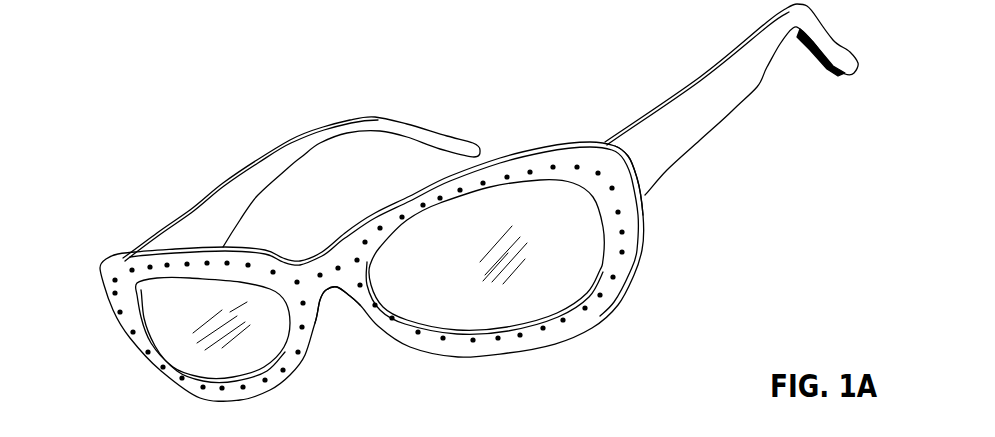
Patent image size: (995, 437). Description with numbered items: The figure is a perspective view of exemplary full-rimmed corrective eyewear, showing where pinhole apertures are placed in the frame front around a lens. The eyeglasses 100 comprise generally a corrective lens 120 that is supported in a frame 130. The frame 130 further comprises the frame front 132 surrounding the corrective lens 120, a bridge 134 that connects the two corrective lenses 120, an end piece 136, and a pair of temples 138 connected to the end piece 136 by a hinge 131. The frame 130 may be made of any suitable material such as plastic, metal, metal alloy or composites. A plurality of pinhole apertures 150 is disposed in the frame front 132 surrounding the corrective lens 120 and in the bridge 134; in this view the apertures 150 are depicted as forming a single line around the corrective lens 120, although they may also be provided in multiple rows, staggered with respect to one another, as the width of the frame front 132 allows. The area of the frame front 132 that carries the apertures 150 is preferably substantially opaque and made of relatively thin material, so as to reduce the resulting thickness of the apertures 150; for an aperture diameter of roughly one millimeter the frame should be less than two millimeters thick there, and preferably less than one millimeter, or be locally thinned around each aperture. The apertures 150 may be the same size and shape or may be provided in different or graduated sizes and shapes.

The eyeglasses 100 is at (157, 66).
The corrective lens 120 is at (167, 337).
The frame 130 is at (655, 264).
The hinge 131 is at (127, 257).
The frame front 132 is at (553, 346).
The bridge 134 is at (337, 290).
The end piece 136 is at (613, 163).
The temples 138 is at (740, 42).
The pinhole apertures 150 is at (507, 177).